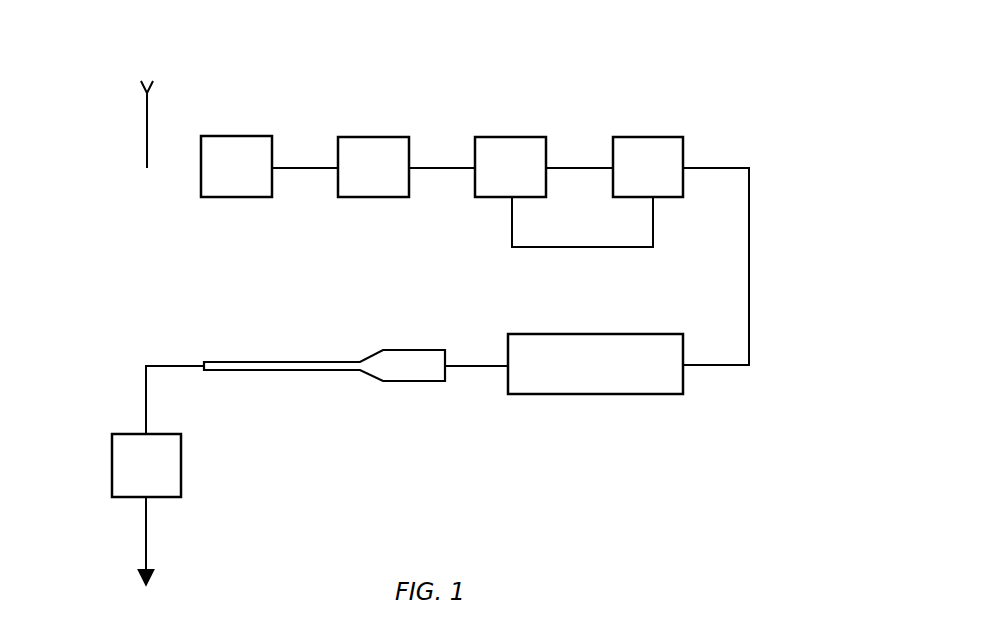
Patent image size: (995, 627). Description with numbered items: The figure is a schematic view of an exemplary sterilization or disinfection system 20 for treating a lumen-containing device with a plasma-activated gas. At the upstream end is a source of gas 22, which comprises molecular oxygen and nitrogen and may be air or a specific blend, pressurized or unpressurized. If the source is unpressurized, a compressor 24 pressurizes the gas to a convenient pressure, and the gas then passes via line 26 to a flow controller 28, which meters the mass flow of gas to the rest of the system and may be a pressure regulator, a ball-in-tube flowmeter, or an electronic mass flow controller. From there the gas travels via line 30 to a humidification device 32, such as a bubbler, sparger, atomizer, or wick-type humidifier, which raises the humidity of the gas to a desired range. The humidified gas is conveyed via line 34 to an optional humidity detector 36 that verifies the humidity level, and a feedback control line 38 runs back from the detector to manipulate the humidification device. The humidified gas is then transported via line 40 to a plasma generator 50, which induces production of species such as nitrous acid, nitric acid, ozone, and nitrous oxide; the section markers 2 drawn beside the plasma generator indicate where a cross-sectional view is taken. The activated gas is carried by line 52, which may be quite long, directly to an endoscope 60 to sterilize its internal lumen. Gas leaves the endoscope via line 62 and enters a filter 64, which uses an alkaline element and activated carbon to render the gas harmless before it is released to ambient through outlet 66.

The sterilization/disinfection system 20 is at (698, 21).
The source of gas 22 is at (116, 76).
The compressor 24 is at (233, 136).
The line 26 is at (305, 168).
The flow controller 28 is at (372, 137).
The line 30 is at (441, 168).
The humidification device 32 is at (512, 137).
The line 34 is at (583, 168).
The humidity detector 36 is at (650, 137).
The control line 38 is at (560, 247).
The line 40 is at (751, 266).
The plasma generator 50 is at (538, 403).
The section line 2 is at (658, 322).
The line 52 is at (475, 363).
The endoscope 60 is at (288, 362).
The line 62 is at (148, 406).
The filter 64 is at (182, 466).
The outlet 66 is at (148, 534).